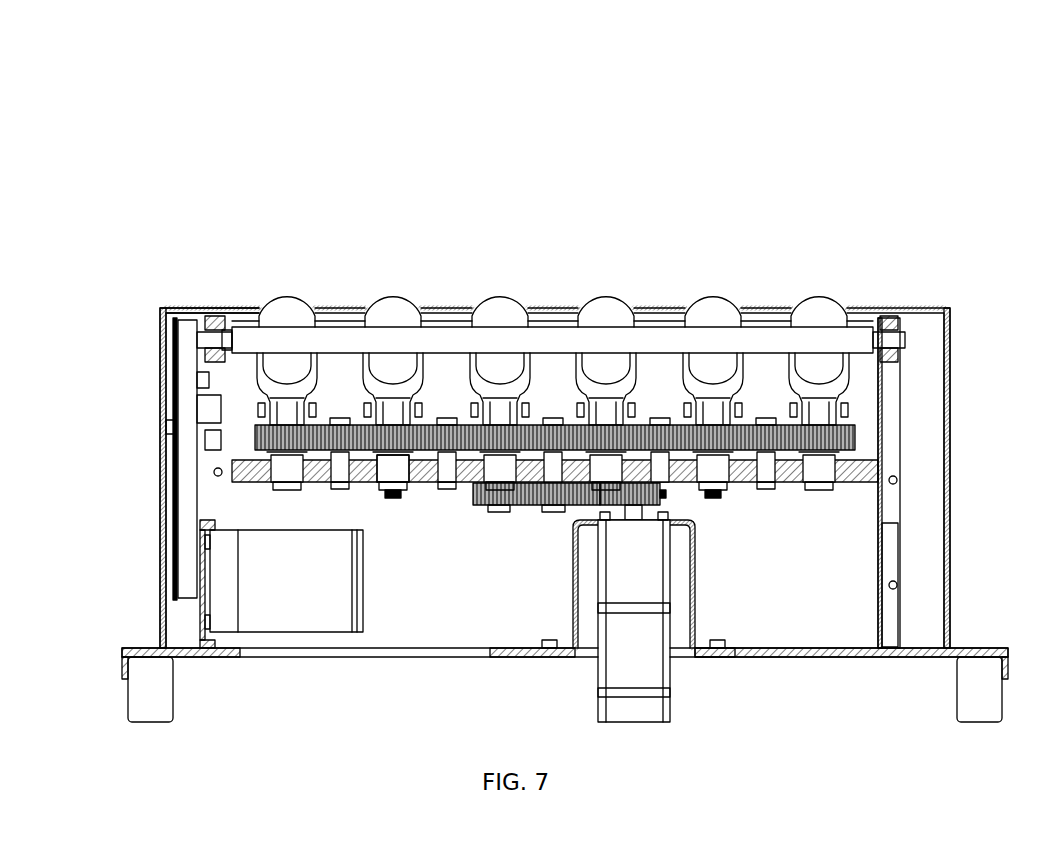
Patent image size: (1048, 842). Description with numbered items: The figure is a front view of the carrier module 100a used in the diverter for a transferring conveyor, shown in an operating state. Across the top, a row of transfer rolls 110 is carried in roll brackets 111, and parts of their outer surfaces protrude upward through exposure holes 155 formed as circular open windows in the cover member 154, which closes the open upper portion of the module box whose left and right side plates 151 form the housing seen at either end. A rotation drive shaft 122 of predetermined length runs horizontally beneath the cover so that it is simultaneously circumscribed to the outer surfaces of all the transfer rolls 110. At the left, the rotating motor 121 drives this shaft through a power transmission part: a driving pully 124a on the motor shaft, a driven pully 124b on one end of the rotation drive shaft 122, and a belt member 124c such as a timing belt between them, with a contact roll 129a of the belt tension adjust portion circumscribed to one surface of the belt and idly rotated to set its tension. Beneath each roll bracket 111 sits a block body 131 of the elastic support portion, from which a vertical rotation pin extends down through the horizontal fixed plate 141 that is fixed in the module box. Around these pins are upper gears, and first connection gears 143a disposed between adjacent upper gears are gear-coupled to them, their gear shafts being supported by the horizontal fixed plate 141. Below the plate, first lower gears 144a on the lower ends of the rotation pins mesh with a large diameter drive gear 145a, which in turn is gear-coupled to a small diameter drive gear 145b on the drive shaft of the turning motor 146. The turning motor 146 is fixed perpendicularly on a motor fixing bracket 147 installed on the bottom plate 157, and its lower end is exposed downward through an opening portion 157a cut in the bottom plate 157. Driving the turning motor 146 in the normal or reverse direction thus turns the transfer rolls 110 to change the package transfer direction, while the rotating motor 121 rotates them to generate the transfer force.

The carrier module 100a is at (533, 385).
The transfer roll 110 is at (393, 308).
The roll bracket 111 is at (340, 372).
The rotating motor 121 is at (297, 607).
The rotation drive shaft 122 is at (283, 340).
The driving pully 124a is at (175, 578).
The driven pully 124b is at (168, 336).
The belt member 124c is at (186, 528).
The contact roll 129a is at (166, 428).
The block body 131 is at (430, 400).
The horizontal fixed plate 141 is at (880, 463).
The first connection gear 143a is at (437, 448).
The first lower gear 144a is at (478, 505).
The large diameter drive gear 145a is at (540, 510).
The small diameter drive gear 145b is at (668, 493).
The turning motor 146 is at (648, 562).
The motor fixing bracket 147 is at (697, 600).
The side plate 151 is at (913, 402).
The cover member 154 is at (912, 308).
The exposure hole 155 is at (258, 308).
The bottom plate 157 is at (982, 648).
The opening portion 157a is at (697, 657).